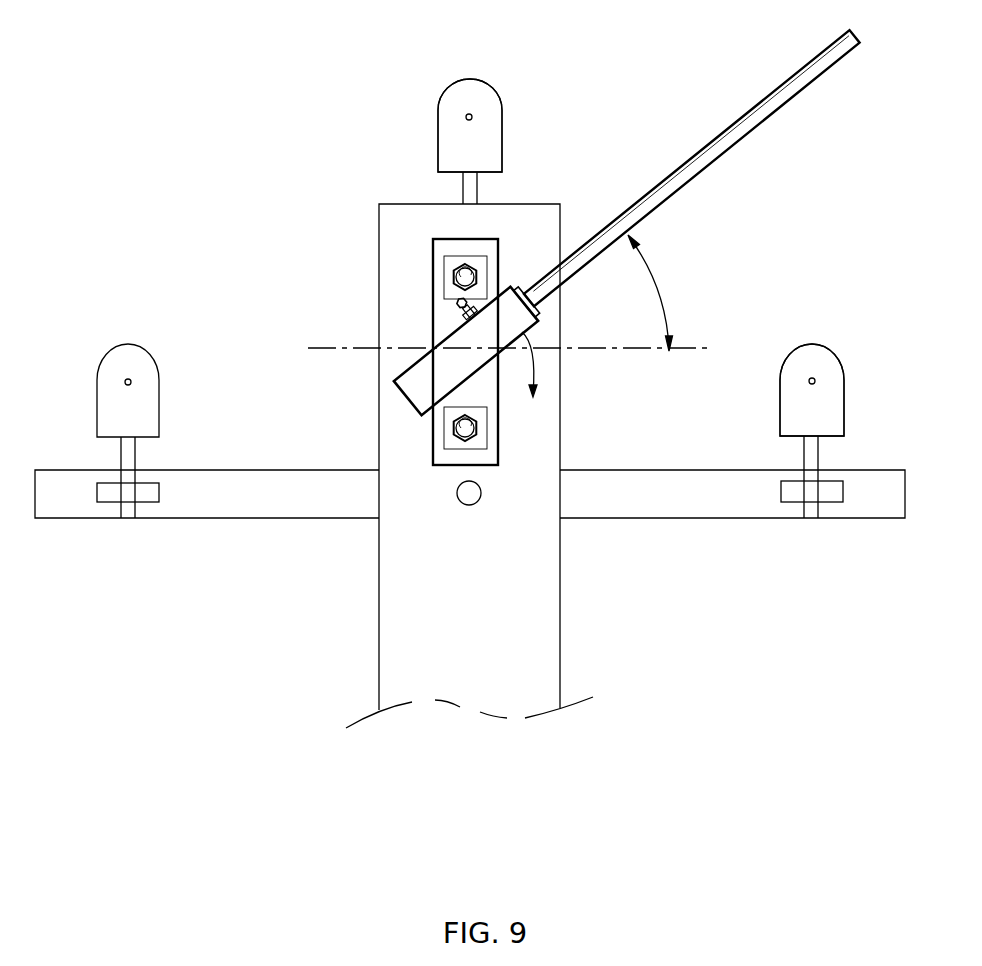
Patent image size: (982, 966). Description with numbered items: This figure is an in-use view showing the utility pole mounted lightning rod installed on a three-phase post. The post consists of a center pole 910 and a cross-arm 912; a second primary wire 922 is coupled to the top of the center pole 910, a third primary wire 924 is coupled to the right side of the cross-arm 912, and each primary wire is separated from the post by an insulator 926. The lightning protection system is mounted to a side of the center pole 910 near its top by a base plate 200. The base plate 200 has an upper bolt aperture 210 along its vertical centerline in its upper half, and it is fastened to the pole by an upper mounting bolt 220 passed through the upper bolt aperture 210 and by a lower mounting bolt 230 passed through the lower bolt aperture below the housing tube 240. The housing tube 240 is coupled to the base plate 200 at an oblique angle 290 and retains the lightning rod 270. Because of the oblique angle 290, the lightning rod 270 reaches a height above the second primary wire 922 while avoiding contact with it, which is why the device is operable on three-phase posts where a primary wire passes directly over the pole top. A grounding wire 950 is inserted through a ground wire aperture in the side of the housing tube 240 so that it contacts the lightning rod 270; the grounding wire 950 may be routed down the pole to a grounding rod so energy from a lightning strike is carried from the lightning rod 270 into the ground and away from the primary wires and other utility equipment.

The base plate 200 is at (496, 240).
The upper bolt aperture 210 is at (128, 382).
The upper mounting bolt 220 is at (460, 278).
The lower mounting bolt 230 is at (468, 428).
The housing tube 240 is at (410, 387).
The lightning rod 270 is at (712, 141).
The oblique angle 290 is at (519, 293).
The center pole 910 is at (532, 606).
The cross-arm 912 is at (277, 510).
The second primary wire 922 is at (469, 117).
The third primary wire 924 is at (812, 381).
The insulator 926 is at (453, 148).
The grounding wire 950 is at (537, 363).